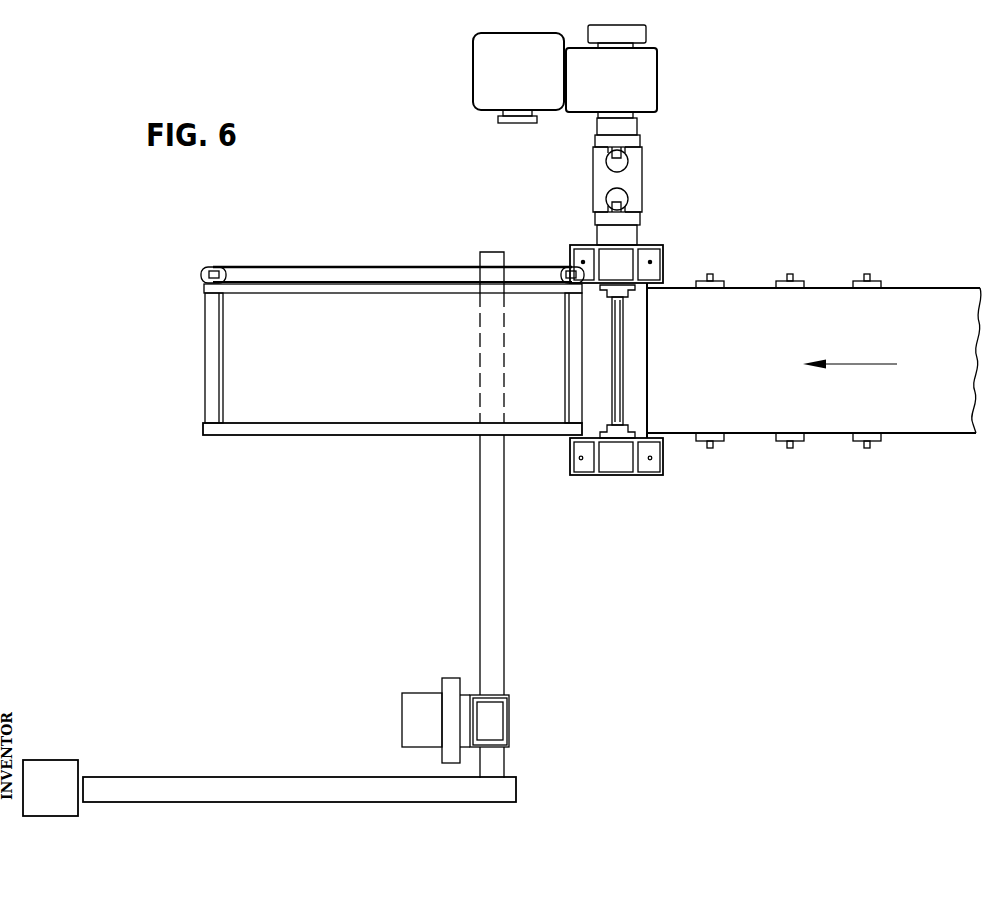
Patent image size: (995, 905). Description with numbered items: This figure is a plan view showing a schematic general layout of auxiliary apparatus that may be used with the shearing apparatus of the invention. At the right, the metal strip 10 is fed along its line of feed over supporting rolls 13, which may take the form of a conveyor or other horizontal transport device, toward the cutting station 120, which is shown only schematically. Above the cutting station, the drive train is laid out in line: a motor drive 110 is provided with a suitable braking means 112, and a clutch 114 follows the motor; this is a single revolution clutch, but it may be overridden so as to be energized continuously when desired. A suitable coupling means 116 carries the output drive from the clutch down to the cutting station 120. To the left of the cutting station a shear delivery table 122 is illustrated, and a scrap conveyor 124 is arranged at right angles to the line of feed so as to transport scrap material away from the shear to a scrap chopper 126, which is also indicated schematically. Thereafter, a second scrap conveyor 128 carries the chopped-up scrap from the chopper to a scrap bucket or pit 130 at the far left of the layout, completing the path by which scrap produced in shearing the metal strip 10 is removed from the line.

The metal strip 10 is at (909, 310).
The supporting rolls 13 is at (722, 283).
The motor drive 110 is at (484, 69).
The braking means 112 is at (517, 124).
The clutch 114 is at (644, 31).
The coupling means 116 is at (633, 183).
The cutting station 120 is at (586, 411).
The shear delivery table 122 is at (373, 404).
The scrap conveyor 124 is at (498, 569).
The scrap chopper 126 is at (511, 716).
The scrap conveyor 128 is at (300, 777).
The scrap bucket or pit 130 is at (63, 768).